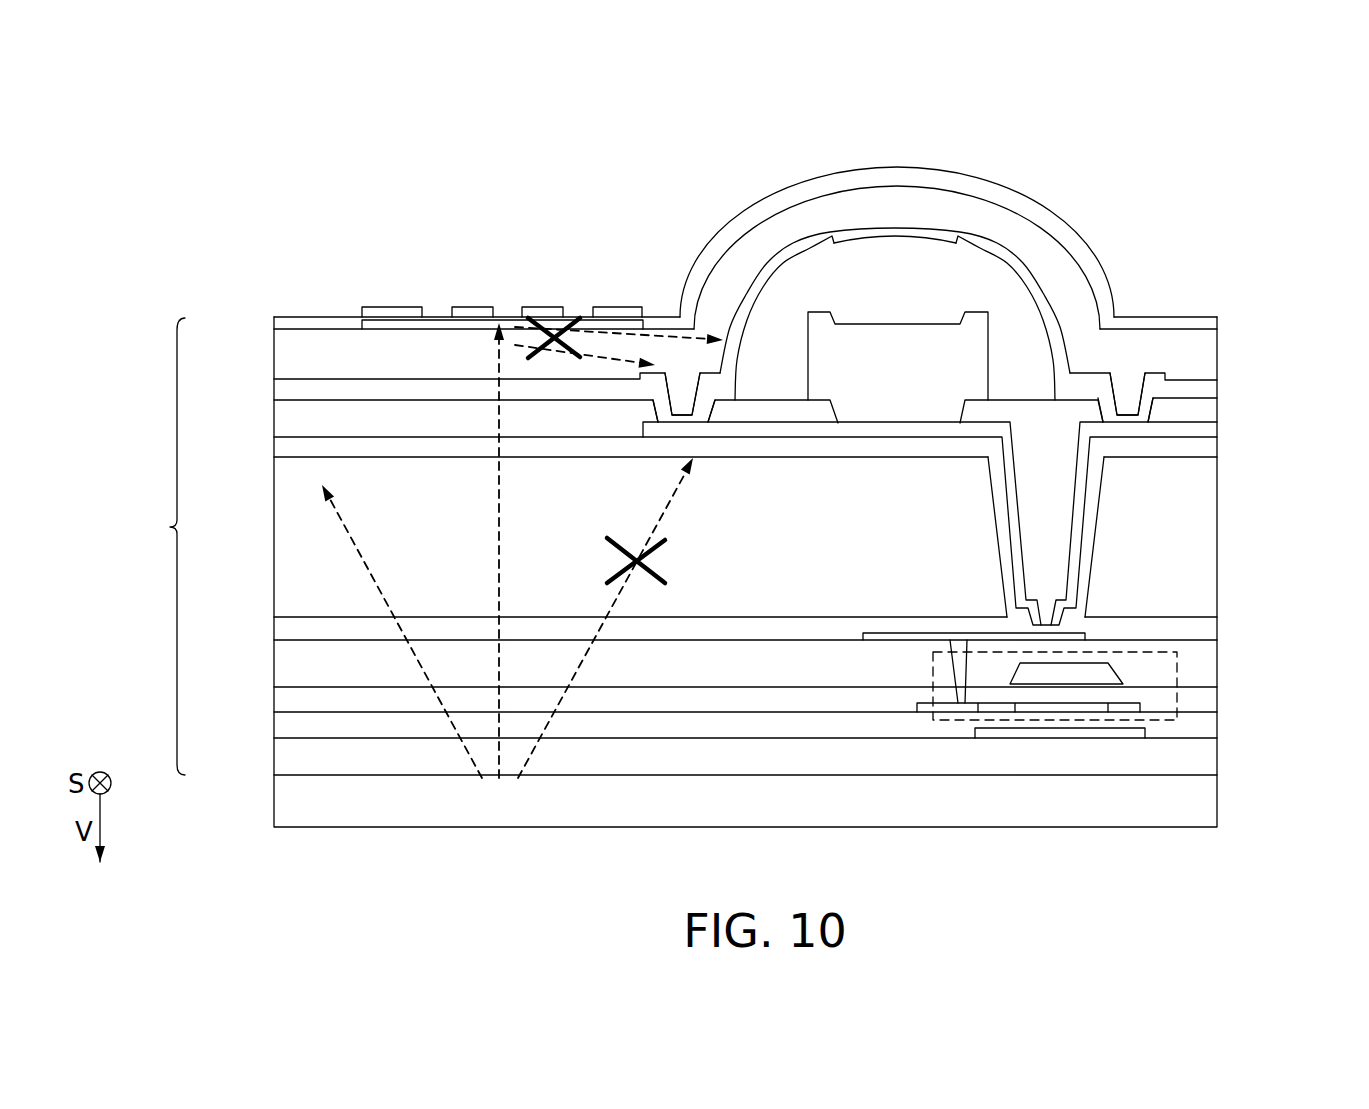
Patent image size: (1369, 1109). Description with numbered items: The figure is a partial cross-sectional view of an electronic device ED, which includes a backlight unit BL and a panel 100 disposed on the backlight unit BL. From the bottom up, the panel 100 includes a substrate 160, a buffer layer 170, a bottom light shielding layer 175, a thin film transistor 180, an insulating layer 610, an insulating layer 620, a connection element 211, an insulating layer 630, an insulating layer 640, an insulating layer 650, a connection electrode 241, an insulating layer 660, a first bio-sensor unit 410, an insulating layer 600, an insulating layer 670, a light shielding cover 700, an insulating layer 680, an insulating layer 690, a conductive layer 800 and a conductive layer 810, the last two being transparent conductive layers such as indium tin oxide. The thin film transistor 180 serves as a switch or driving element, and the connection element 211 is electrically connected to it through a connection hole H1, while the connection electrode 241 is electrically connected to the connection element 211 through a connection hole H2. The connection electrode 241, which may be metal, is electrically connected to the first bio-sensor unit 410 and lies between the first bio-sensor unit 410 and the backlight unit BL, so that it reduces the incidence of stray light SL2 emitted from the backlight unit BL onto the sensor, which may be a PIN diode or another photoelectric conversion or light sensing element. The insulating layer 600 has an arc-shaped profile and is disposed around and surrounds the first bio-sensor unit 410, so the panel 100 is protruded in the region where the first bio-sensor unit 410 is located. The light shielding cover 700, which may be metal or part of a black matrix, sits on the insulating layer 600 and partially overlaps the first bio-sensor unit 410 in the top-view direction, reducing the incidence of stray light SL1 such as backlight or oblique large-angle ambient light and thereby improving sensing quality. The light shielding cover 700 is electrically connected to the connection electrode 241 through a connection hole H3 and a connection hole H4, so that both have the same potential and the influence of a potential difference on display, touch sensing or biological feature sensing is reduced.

The panel 100 is at (149, 546).
The backlight unit BL is at (285, 808).
The substrate 160 is at (285, 763).
The buffer layer 170 is at (285, 727).
The bottom light shielding layer 175 is at (1135, 733).
The thin film transistor 180 is at (1177, 655).
The connection element 211 is at (1080, 638).
The connection electrode 241 is at (1160, 430).
The first bio-sensor unit 410 is at (990, 354).
The insulating layer 600 is at (1012, 315).
The insulating layer 610 is at (285, 700).
The insulating layer 620 is at (285, 665).
The insulating layer 630 is at (285, 627).
The insulating layer 640 is at (285, 538).
The insulating layer 650 is at (285, 450).
The insulating layer 660 is at (285, 422).
The insulating layer 670 is at (285, 390).
The insulating layer 680 is at (285, 361).
The insulating layer 690 is at (285, 322).
The light shielding cover 700 is at (785, 263).
The conductive layer 800 is at (437, 320).
The conductive layer 810 is at (387, 307).
The connection hole H1 is at (950, 640).
The connection hole H2 is at (1085, 520).
The connection hole H3 is at (1150, 392).
The connection hole H4 is at (640, 388).
The stray light SL1 is at (665, 335).
The stray light SL2 is at (670, 497).
The electronic device ED is at (1236, 172).